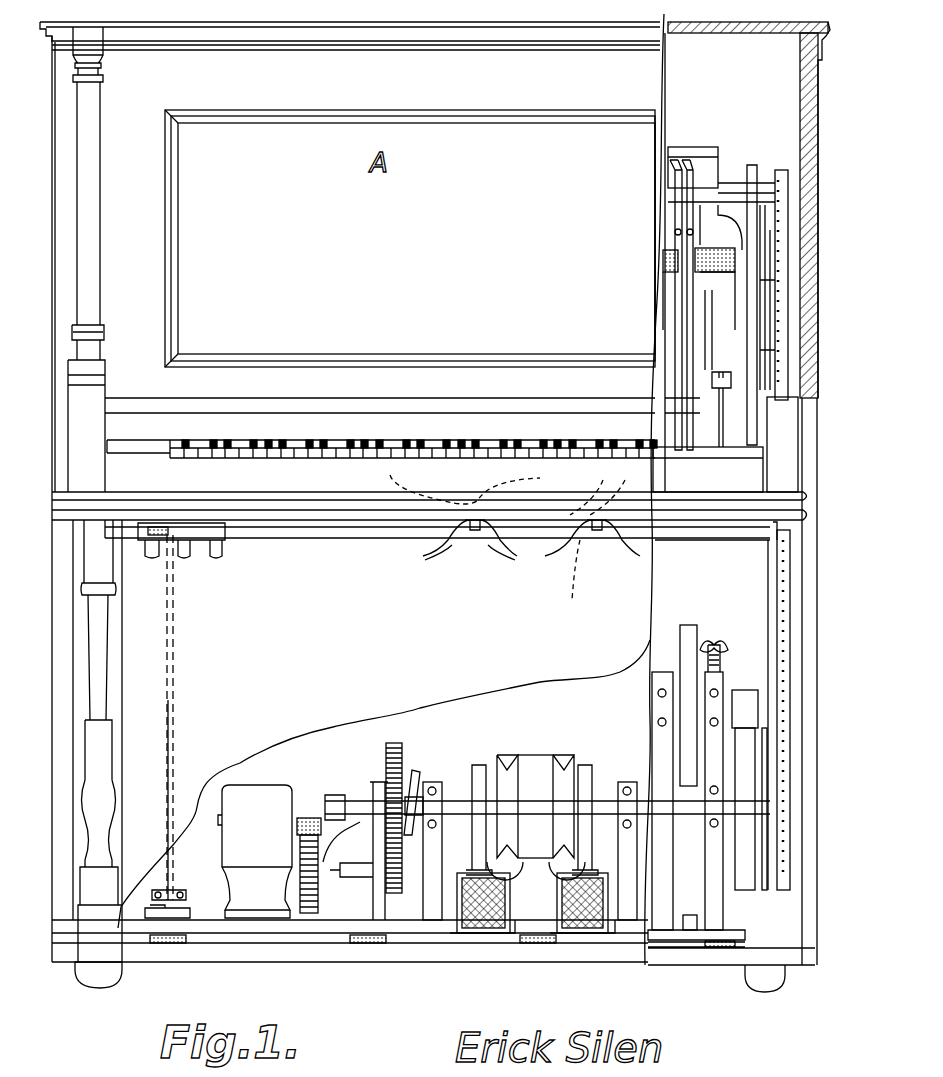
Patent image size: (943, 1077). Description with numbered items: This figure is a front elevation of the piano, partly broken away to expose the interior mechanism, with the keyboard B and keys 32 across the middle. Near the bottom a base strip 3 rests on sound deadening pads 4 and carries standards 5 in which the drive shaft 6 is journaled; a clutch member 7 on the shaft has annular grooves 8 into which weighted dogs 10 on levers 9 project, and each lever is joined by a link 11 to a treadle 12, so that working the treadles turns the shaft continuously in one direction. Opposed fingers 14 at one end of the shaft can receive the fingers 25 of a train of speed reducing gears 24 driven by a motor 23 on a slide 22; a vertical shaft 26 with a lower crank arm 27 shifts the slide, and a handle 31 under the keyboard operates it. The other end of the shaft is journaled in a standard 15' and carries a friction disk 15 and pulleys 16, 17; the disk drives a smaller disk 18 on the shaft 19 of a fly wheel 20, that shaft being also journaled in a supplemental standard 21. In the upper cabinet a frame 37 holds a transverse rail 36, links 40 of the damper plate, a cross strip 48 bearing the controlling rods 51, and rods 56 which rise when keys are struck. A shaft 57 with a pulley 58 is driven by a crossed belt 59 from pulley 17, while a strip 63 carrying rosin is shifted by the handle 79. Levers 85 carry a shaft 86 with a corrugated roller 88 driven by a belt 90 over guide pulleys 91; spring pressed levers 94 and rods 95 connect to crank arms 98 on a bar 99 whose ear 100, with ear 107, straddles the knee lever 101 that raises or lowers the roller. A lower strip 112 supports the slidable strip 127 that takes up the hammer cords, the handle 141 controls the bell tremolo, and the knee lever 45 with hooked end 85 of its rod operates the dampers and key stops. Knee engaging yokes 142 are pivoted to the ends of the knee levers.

The strip 63 is at (725, 147).
The controlling rods 51 is at (690, 172).
The shaft 57 is at (730, 185).
The pulley 58 is at (775, 180).
The cross strip 48 is at (670, 198).
The rod 56 is at (676, 236).
The shaft 86 is at (740, 255).
The longitudinally corrugated roller 88 is at (663, 265).
The guide pulleys 91 is at (760, 283).
The strip 127 is at (665, 320).
The crossed belt 59 is at (762, 328).
The lower strip 112 is at (700, 338).
The rod 95 is at (752, 320).
The transverse rail 36 is at (666, 404).
The keys 32 is at (400, 440).
The keyboard B is at (488, 433).
The knee lever 101 is at (640, 440).
The belt 90 is at (770, 590).
The links 40 is at (715, 420).
The frame 37 is at (748, 440).
The handle 141 is at (220, 545).
The spring pressed lever 94 is at (414, 484).
The knee lever 45 is at (478, 525).
The levers 85 is at (500, 520).
The ear 100 is at (606, 491).
The handle 79 is at (185, 552).
The bar 99 is at (340, 528).
The handle 31 is at (152, 556).
The knee engaging yoke 142 is at (540, 560).
The ear 107 is at (580, 600).
The crank arm 98 is at (772, 535).
The shaft 19 is at (664, 672).
The fly wheel 20 is at (695, 640).
The disk 18 is at (745, 690).
The supplemental standard 21 is at (655, 648).
The fingers 25 is at (400, 780).
The levers 9 is at (480, 768).
The annular grooves 8 is at (508, 770).
The clutch member 7 is at (530, 768).
The drive shaft 6 is at (617, 795).
The fingers 14 is at (420, 790).
The standards 5 is at (440, 810).
The speed reducing gears 24 is at (380, 800).
The motor 23 is at (257, 826).
The link 11 is at (478, 838).
The weighted dog 10 is at (555, 865).
The friction disk 15 is at (696, 796).
The pulley 16 is at (760, 795).
The pulley 17 is at (775, 840).
The standard 15' is at (756, 824).
The vertical shaft 26 is at (170, 870).
The crank arm 27 is at (185, 900).
The slide 22 is at (305, 922).
The pads 4 is at (360, 945).
The base strip 3 is at (447, 933).
The treadle 12 is at (590, 935).